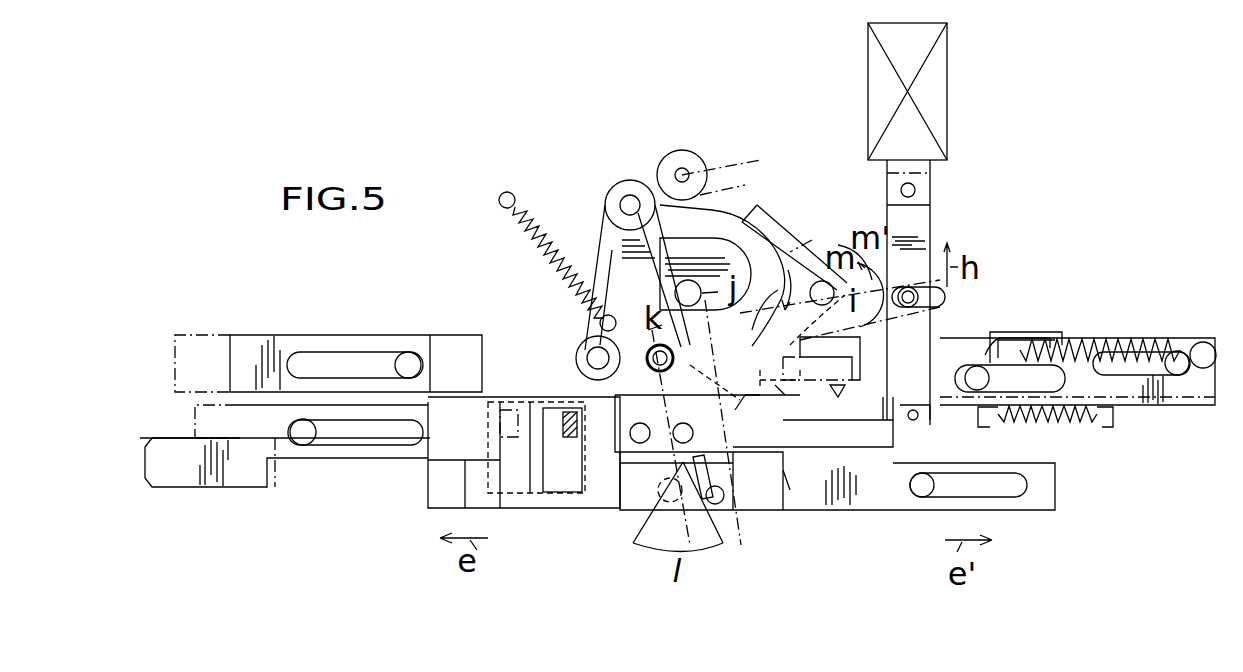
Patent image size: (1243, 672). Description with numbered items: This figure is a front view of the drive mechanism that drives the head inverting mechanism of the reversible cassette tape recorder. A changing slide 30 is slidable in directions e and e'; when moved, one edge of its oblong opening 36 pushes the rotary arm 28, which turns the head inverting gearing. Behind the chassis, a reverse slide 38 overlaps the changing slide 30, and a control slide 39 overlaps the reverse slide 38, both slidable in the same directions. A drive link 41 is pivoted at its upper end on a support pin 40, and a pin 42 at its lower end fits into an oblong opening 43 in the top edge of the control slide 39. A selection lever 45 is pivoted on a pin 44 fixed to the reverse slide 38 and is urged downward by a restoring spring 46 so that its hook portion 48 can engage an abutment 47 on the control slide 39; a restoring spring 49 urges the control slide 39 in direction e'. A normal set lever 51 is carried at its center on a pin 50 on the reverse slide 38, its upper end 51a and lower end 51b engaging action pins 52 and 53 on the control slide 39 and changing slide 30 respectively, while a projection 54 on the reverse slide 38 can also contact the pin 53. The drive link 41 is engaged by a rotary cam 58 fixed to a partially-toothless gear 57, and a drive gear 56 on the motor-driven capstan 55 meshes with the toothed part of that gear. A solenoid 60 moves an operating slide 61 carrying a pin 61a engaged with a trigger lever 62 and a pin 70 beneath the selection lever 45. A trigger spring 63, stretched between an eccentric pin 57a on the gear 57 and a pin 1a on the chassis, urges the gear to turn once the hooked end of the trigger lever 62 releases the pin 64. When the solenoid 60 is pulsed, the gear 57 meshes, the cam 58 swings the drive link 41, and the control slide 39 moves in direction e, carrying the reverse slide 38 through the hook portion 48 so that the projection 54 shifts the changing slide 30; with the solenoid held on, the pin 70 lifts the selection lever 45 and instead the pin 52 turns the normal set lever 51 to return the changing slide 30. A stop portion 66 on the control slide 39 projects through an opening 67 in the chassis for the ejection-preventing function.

The pin 1a is at (499, 200).
The rotary arm 28 is at (568, 437).
The changing slide 30 is at (848, 506).
The oblong opening 36 is at (572, 496).
The reverse slide 38 is at (868, 470).
The control slide 39 is at (805, 420).
The support pin 40 is at (633, 192).
The drive link 41 is at (622, 240).
The pin 42 is at (676, 354).
The oblong opening 43 is at (660, 392).
The pin 44 is at (978, 362).
The selection lever 45 is at (967, 362).
The restoring spring 46 is at (1064, 424).
The abutment 47 is at (843, 387).
The hook portion 48 is at (876, 400).
The restoring spring 49 is at (1115, 352).
The pin 50 is at (790, 408).
The normal set lever 51 is at (726, 472).
The upper end 51a is at (825, 320).
The lower end 51b is at (706, 500).
The action pin 52 is at (790, 383).
The action pin 53 is at (723, 502).
The projection 54 is at (790, 492).
The capstan 55 is at (692, 165).
The drive gear 56 is at (720, 195).
The partially-toothless gear 57 is at (754, 226).
The pin 57a is at (597, 326).
The rotary cam 58 is at (706, 250).
The solenoid 60 is at (947, 107).
The operating slide 61 is at (913, 231).
The pin 61a is at (945, 287).
The trigger lever 62 is at (800, 246).
The trigger spring 63 is at (557, 267).
The pin 64 is at (818, 337).
The stop portion 66 is at (1040, 330).
The opening 67 is at (1062, 343).
The pin 70 is at (918, 418).